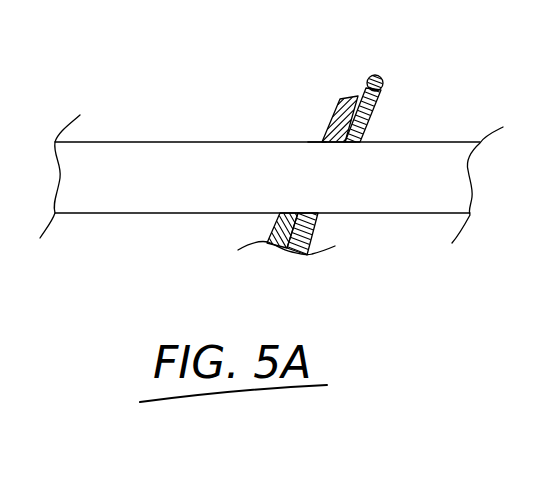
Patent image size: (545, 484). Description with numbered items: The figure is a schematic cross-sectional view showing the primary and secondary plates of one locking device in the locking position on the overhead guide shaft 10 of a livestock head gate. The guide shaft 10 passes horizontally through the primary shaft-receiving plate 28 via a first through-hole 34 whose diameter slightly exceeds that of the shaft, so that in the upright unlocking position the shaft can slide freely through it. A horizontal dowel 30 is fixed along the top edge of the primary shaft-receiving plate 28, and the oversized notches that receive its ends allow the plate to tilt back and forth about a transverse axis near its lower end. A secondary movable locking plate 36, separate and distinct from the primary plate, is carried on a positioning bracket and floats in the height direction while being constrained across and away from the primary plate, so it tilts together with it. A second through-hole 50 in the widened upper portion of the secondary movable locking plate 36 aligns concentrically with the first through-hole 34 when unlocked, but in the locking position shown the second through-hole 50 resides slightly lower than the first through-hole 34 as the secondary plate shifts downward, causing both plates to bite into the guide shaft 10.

The guide shaft 10 is at (138, 153).
The primary shaft-receiving plate 28 is at (366, 126).
The horizontal dowel 30 is at (387, 80).
The first through-hole 34 is at (357, 138).
The secondary movable locking plate 36 is at (340, 99).
The second through-hole 50 is at (318, 140).